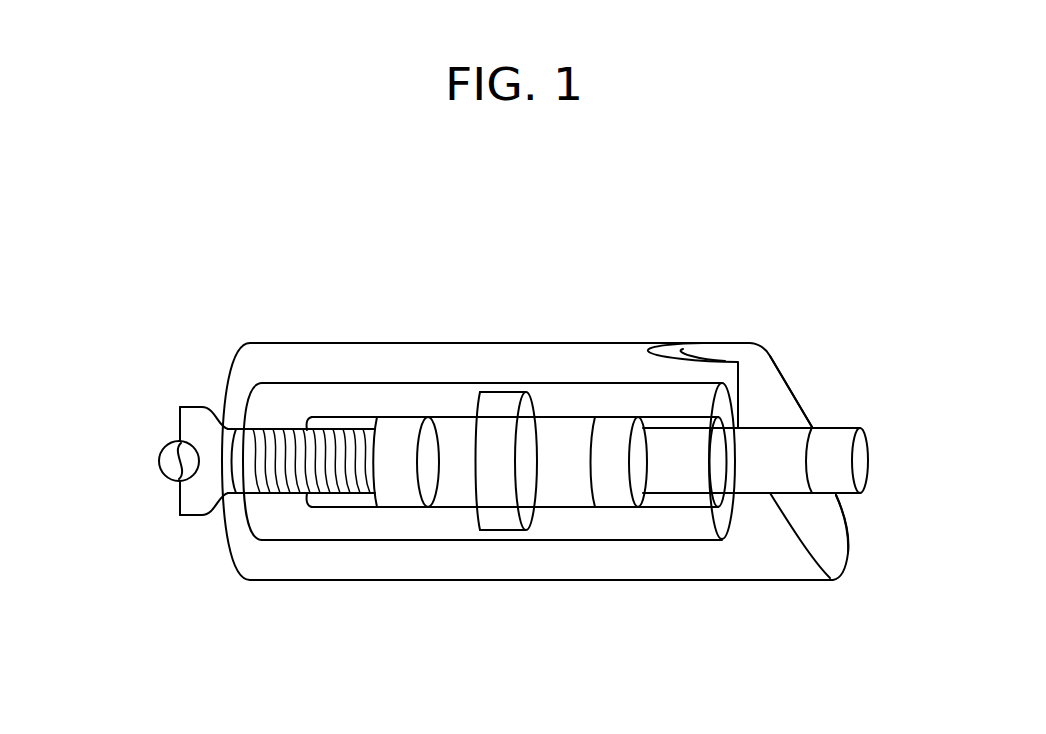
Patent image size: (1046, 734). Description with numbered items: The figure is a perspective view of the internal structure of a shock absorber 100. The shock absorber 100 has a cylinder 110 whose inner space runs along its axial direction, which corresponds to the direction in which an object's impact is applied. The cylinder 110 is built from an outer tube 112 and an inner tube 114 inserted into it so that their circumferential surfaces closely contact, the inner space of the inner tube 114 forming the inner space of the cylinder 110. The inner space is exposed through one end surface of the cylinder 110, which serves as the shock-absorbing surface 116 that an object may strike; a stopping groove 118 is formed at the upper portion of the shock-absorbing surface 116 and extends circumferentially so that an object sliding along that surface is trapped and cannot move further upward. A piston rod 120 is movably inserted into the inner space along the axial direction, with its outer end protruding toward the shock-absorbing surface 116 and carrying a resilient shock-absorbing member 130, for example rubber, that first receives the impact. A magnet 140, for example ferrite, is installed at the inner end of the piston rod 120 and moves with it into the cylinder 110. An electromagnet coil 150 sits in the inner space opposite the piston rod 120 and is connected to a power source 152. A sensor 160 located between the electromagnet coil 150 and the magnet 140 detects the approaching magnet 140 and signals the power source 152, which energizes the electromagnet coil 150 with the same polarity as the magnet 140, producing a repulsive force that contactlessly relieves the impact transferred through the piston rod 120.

The shock absorber 100 is at (880, 280).
The cylinder 110 is at (142, 337).
The outer tube 112 is at (243, 345).
The inner tube 114 is at (258, 384).
The shock-absorbing surface 116 is at (776, 390).
The stopping groove 118 is at (660, 352).
The piston rod 120 is at (753, 483).
The shock-absorbing member 130 is at (820, 483).
The magnet 140 is at (617, 495).
The electromagnet coil 150 is at (348, 488).
The power source 152 is at (158, 461).
The sensor 160 is at (503, 405).